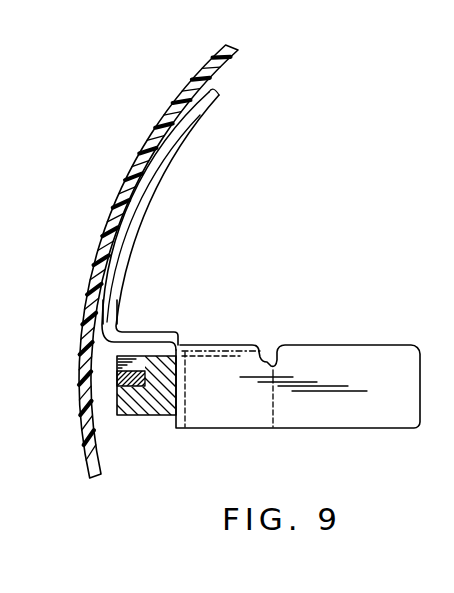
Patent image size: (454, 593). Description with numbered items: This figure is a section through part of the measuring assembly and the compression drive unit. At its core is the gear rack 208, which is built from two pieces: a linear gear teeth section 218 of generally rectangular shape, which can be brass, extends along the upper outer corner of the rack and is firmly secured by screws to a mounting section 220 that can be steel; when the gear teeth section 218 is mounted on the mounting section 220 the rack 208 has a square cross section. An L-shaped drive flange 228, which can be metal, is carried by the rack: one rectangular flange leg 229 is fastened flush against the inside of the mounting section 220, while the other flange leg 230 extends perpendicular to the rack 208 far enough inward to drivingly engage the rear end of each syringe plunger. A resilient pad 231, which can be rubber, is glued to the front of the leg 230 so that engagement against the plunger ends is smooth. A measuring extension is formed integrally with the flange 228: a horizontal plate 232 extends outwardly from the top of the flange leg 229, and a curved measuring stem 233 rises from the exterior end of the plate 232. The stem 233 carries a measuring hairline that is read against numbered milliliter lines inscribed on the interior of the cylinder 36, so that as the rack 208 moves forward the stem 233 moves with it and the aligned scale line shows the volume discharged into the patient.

The cylinder 36 is at (157, 140).
The gear rack 208 is at (112, 400).
The linear gear teeth section 218 is at (118, 381).
The mounting section 220 is at (152, 415).
The L-shaped drive flange 228 is at (254, 323).
The flange leg 229 is at (196, 405).
The flange leg 230 is at (247, 413).
The resilient pad 231 is at (288, 354).
The horizontal plate 232 is at (147, 333).
The curved measuring stem 233 is at (148, 198).